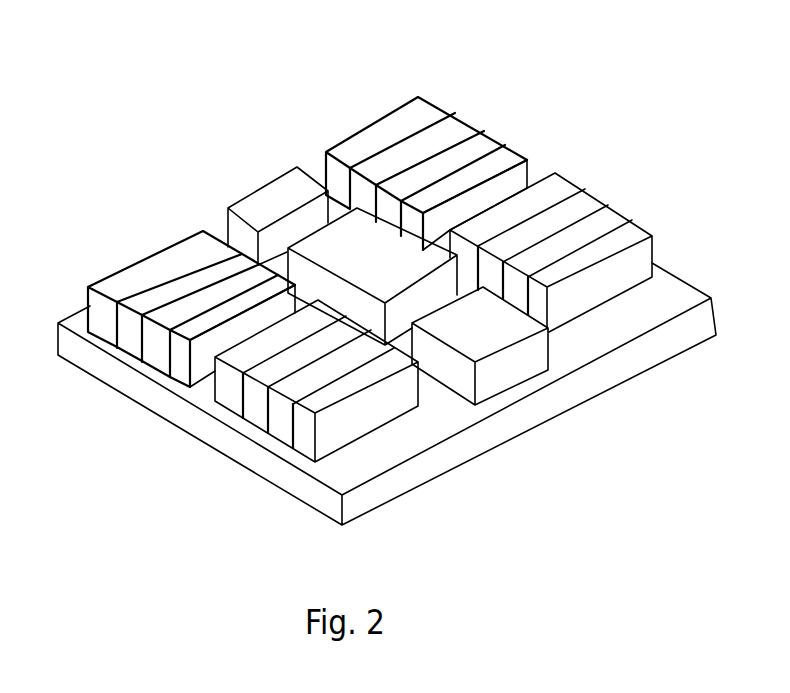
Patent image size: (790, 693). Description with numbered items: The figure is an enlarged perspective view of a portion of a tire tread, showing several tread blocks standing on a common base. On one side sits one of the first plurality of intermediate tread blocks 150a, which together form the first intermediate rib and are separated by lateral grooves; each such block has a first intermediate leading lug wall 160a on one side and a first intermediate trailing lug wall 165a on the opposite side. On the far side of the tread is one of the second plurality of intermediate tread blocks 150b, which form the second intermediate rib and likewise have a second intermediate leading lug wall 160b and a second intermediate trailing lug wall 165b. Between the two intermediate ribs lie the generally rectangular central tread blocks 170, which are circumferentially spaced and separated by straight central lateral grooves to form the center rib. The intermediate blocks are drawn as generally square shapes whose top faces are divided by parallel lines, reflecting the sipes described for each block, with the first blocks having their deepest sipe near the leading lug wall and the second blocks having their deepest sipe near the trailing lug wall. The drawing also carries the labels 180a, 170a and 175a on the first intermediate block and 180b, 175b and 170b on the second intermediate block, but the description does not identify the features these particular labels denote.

The first plurality of intermediate tread blocks 150a is at (166, 343).
The first intermediate leading lug wall 160a is at (96, 280).
The second layer of first stack 180a is at (120, 317).
The third layer of first stack 170a is at (145, 352).
The fourth layer of first stack 175a is at (175, 345).
The first intermediate trailing lug wall 165a is at (210, 370).
The central tread blocks 170 is at (257, 176).
The second plurality of intermediate tread blocks 150b is at (476, 147).
The second intermediate leading lug wall 160b is at (420, 97).
The second layer of second stack 180b is at (457, 114).
The third layer of second stack 175b is at (484, 122).
The fourth layer of second stack 170b is at (506, 138).
The second intermediate trailing lug wall 165b is at (528, 160).